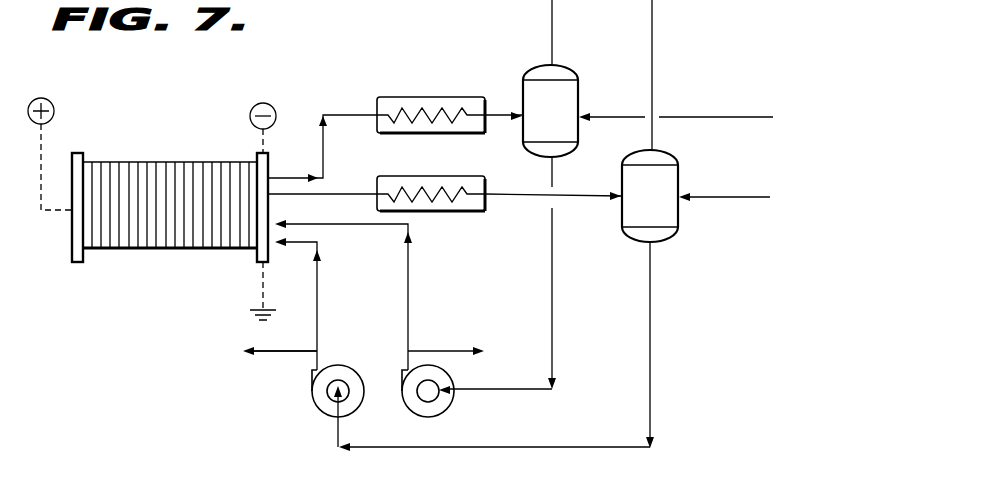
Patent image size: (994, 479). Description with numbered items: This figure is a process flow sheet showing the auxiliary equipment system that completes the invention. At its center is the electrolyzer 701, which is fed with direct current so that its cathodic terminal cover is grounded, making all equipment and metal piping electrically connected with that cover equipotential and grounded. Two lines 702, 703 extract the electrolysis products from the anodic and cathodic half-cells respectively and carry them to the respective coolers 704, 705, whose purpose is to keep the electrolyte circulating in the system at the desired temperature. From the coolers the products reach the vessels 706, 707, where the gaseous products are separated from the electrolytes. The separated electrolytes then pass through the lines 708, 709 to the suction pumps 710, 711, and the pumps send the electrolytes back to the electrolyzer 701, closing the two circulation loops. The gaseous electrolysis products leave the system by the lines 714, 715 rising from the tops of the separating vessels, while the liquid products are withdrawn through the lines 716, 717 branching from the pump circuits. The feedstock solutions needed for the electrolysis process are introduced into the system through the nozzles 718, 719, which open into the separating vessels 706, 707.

The electrolyzer 701 is at (205, 161).
The line 702 is at (324, 158).
The line 703 is at (288, 195).
The cooler 704 is at (430, 82).
The cooler 705 is at (425, 211).
The vessel 706 is at (567, 98).
The vessel 707 is at (680, 178).
The line 708 is at (553, 305).
The line 709 is at (652, 340).
The suction pump 710 is at (452, 412).
The suction pump 711 is at (312, 402).
The line 714 is at (556, 25).
The line 715 is at (655, 33).
The line 716 is at (471, 352).
The line 717 is at (258, 352).
The nozzle 718 is at (747, 115).
The nozzle 719 is at (703, 200).